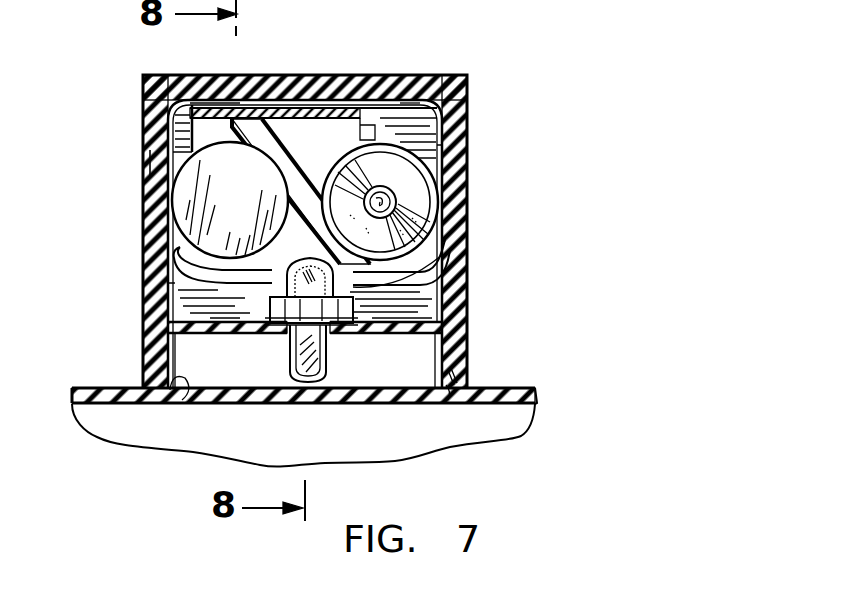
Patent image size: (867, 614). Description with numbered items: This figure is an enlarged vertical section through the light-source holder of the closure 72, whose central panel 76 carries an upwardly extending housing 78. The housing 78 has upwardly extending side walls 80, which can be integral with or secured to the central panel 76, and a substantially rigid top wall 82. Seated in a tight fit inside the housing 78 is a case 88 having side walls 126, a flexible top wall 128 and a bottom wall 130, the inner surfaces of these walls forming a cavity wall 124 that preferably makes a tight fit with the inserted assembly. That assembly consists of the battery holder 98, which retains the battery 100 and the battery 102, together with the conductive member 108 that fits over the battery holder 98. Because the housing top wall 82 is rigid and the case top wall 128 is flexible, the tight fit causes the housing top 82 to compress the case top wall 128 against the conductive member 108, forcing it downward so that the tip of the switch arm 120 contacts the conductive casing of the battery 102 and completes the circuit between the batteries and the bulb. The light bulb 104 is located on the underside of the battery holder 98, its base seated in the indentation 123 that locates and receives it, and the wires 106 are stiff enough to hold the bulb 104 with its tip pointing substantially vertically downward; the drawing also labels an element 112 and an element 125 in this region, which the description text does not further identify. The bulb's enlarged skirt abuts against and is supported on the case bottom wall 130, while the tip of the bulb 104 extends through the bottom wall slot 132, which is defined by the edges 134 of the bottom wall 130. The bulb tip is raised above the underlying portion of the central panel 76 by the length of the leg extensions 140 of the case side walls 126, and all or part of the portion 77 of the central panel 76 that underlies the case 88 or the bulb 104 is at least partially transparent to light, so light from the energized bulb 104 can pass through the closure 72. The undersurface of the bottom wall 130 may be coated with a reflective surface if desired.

The closure 72 is at (484, 460).
The central panel 76 is at (525, 415).
The portion of central panel 77 is at (296, 405).
The housing 78 is at (141, 108).
The side walls 80 is at (150, 317).
The top wall 82 is at (250, 78).
The case 88 is at (142, 163).
The battery holder 98 is at (300, 112).
The battery 100 is at (172, 192).
The battery 102 is at (440, 182).
The light bulb 104 is at (318, 384).
The wires 106 is at (165, 255).
The conductive member 108 is at (200, 78).
The bolt cap 112 is at (466, 268).
The switch arm 120 is at (468, 115).
The indentation 123 is at (466, 291).
The cavity wall 124 is at (148, 152).
The washer 125 is at (466, 318).
The side walls 126 is at (150, 283).
The top wall 128 is at (386, 78).
The bottom wall 130 is at (190, 336).
The bottom wall slot 132 is at (340, 336).
The edges 134 is at (284, 342).
The leg extensions 140 is at (170, 400).